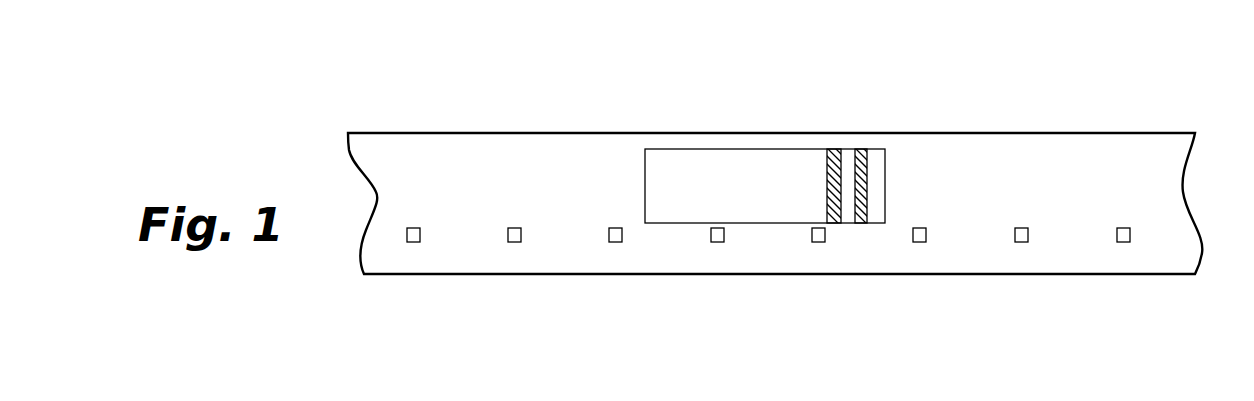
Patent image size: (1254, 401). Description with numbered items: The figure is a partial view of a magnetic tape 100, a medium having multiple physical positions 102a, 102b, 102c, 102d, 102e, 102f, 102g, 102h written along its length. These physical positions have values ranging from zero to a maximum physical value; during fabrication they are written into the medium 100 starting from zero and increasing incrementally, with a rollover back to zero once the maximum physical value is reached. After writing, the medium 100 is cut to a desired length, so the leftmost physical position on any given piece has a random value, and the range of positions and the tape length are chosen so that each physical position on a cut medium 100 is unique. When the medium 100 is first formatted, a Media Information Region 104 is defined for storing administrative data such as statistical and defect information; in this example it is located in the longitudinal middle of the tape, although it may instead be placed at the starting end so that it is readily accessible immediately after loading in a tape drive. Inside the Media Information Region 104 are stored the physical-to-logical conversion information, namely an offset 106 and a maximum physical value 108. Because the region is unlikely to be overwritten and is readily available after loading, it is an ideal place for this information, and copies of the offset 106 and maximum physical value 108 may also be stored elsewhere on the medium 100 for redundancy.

The magnetic tape 100 is at (1163, 158).
The physical position 102a is at (413, 242).
The physical position 102b is at (515, 242).
The physical position 102c is at (616, 242).
The physical position 102d is at (718, 242).
The physical position 102e is at (818, 242).
The physical position 102f is at (920, 242).
The physical position 102g is at (1022, 242).
The physical position 102h is at (1124, 242).
The Media Information Region 104 is at (677, 150).
The offset 106 is at (827, 180).
The maximum physical value 108 is at (885, 180).